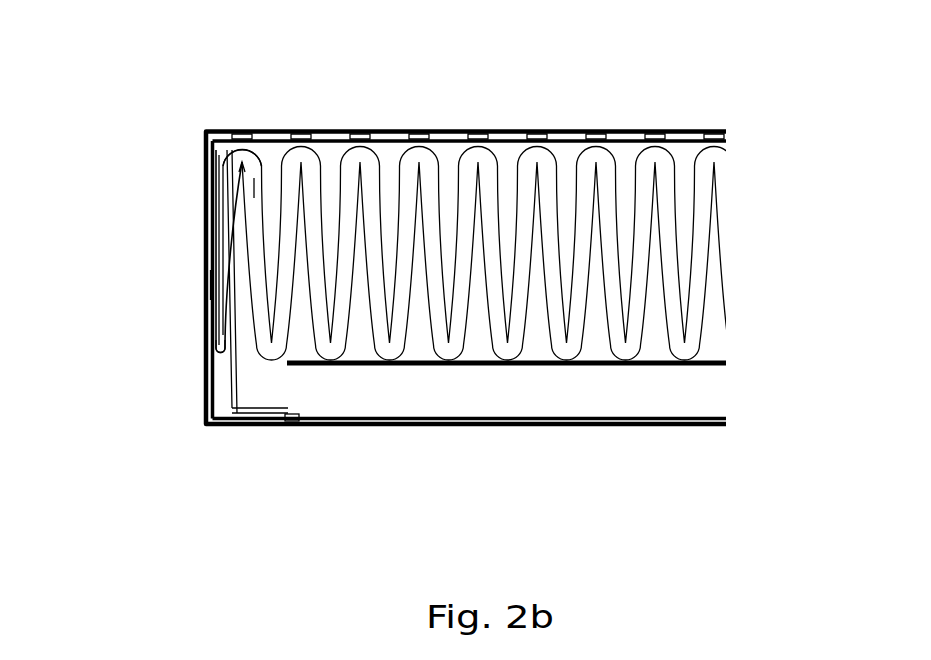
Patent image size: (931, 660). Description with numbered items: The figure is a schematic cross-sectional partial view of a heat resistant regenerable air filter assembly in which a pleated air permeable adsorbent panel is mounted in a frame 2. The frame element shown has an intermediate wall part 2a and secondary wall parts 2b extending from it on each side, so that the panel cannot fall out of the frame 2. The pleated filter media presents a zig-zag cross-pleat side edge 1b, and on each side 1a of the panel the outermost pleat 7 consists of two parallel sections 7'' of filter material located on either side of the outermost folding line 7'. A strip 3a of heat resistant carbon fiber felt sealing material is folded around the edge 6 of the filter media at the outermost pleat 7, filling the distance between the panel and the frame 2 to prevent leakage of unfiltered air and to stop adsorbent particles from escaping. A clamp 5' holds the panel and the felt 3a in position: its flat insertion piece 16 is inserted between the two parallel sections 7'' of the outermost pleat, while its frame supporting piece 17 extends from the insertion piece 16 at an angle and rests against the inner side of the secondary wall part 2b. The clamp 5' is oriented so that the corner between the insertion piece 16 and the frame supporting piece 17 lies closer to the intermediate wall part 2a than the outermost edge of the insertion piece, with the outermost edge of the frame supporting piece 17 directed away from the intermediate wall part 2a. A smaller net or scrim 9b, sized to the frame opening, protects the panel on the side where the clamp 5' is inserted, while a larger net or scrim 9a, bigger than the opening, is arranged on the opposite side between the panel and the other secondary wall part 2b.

The frame 2 is at (205, 163).
The intermediate wall part 2a is at (205, 305).
The secondary wall part 2b is at (270, 432).
The strip of carbon fiber felt 3a is at (216, 285).
The side of the pleated filter media panel 1a is at (233, 247).
The cross-pleat side edge 1b is at (643, 213).
The edge of the filter media 6 is at (218, 356).
The outermost pleat 7 is at (211, 106).
The outermost folding line 7' is at (244, 123).
The parallel sections of filter material 7'' is at (300, 112).
The clamp 5' is at (179, 311).
The flat insertion piece 16 is at (235, 369).
The frame supporting piece 17 is at (263, 420).
The larger net or scrim 9a is at (562, 136).
The smaller net or scrim 9b is at (662, 368).